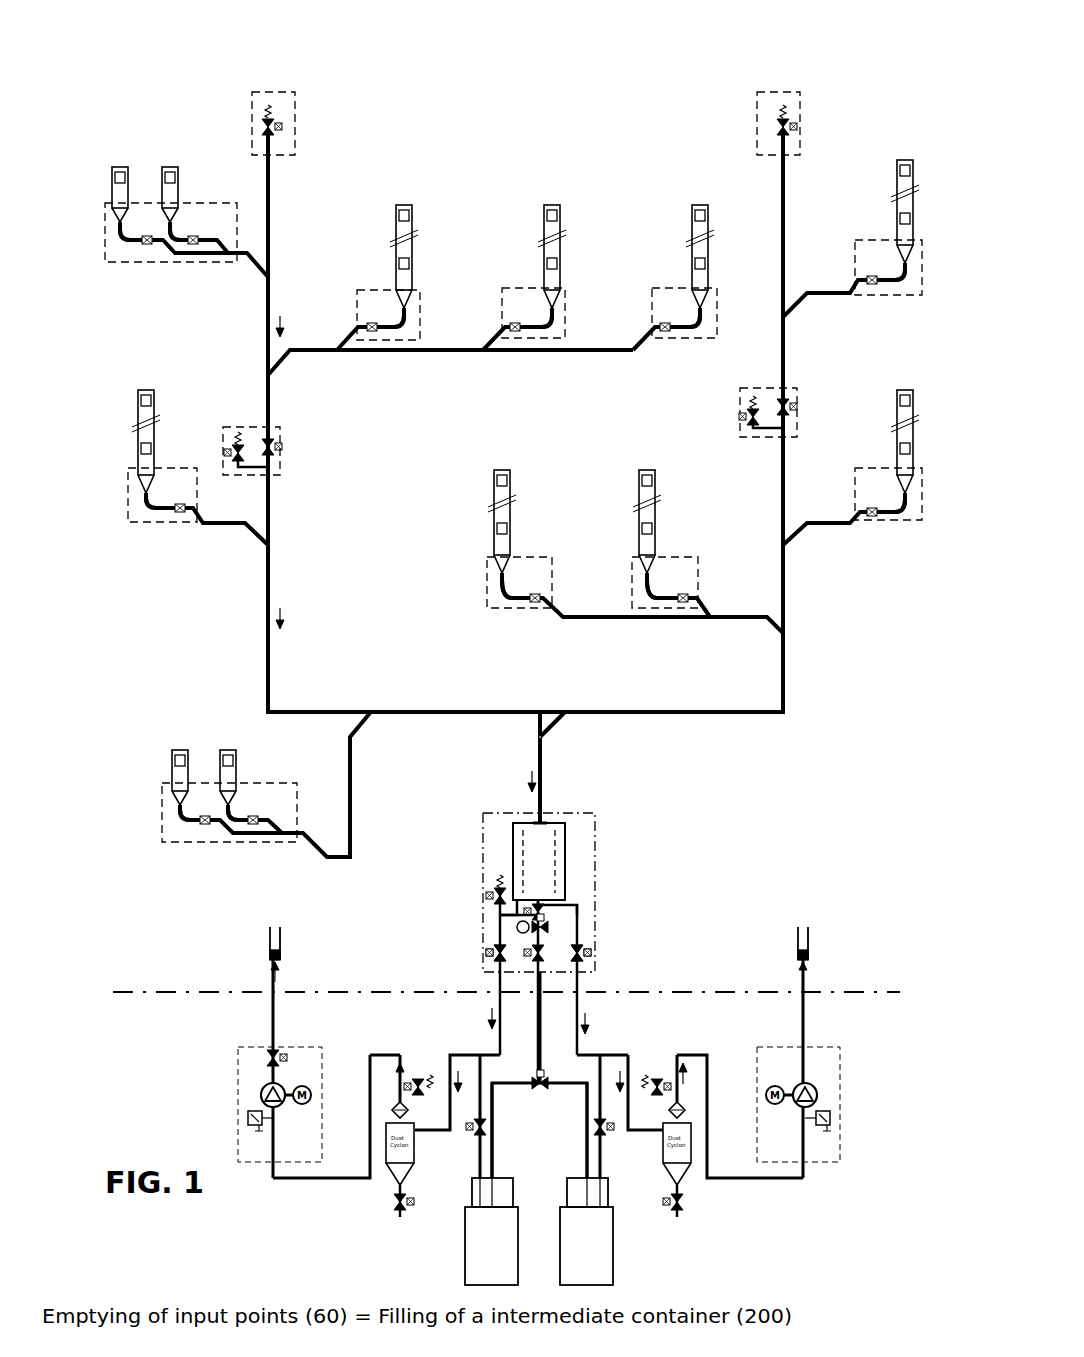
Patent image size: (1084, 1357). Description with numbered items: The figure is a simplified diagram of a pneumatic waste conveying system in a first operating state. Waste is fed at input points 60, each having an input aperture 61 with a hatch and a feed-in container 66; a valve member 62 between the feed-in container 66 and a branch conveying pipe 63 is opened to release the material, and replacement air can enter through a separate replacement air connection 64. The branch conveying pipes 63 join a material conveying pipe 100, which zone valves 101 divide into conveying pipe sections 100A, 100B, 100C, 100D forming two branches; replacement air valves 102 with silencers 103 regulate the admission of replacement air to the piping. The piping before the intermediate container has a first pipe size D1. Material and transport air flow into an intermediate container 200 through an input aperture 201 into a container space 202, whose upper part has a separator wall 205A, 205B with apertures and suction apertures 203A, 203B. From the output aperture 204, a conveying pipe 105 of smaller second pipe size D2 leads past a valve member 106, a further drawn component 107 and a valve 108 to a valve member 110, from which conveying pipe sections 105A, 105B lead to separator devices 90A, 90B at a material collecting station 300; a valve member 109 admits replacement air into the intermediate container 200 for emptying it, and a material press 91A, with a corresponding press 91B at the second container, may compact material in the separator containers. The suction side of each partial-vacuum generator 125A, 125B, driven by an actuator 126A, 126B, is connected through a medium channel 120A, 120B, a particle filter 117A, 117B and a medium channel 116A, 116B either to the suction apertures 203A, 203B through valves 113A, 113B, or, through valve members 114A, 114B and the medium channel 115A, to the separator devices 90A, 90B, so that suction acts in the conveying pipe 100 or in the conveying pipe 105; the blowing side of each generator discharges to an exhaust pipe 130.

The input point 60 is at (112, 186).
The input aperture 61 is at (116, 172).
The valve member 62 is at (145, 243).
The branch conveying pipe 63 is at (252, 258).
The replacement air connection 64 is at (112, 213).
The feed-in container 66 is at (122, 236).
The material conveying pipe 100 is at (543, 770).
The conveying pipe section 100A is at (270, 628).
The conveying pipe section 100B is at (785, 598).
The conveying pipe section 100C is at (270, 225).
The conveying pipe section 100D is at (785, 210).
The zone valve 101 is at (272, 447).
The replacement air valve 102 is at (234, 452).
The silencer 103 is at (236, 432).
The conveying pipe 105 is at (545, 1020).
The conveying pipe section 105A is at (492, 1130).
The conveying pipe section 105B is at (587, 1160).
The valve member 106 is at (495, 917).
The pump 107 is at (552, 928).
The valve 108 is at (545, 951).
The valve member 109 is at (490, 893).
The valve member 110 is at (578, 1055).
The valve 113A is at (495, 963).
The valve 113B is at (587, 960).
The valve member 114A is at (478, 1140).
The valve member 114B is at (602, 1140).
The medium channel 115A is at (480, 1085).
The medium channel 116A is at (447, 1060).
The medium channel 116B is at (630, 1060).
The particle filter 117A is at (395, 1182).
The particle filter 117B is at (683, 1182).
The medium channel 120A is at (370, 1135).
The medium channel 120B is at (692, 1125).
The partial-vacuum generator 125A is at (262, 1089).
The partial-vacuum generator 125B is at (818, 1090).
The actuator 126A is at (312, 1089).
The actuator 126B is at (765, 1089).
The exhaust pipe 130 is at (281, 957).
The intermediate container 200 is at (565, 845).
The input aperture 201 is at (545, 824).
The container space 202 is at (548, 866).
The medium passage 203A is at (505, 890).
The medium passage 203B is at (548, 910).
The output aperture 204 is at (548, 900).
The separator wall 205A is at (515, 855).
The separator wall 205B is at (580, 830).
The material collecting station 300 is at (318, 995).
The separator device 90A is at (465, 1240).
The separator device 90B is at (613, 1240).
The material press 91A is at (472, 1192).
The compactor 91B is at (608, 1192).
The first pipe size D1 is at (425, 712).
The second pipe size D2 is at (537, 1010).